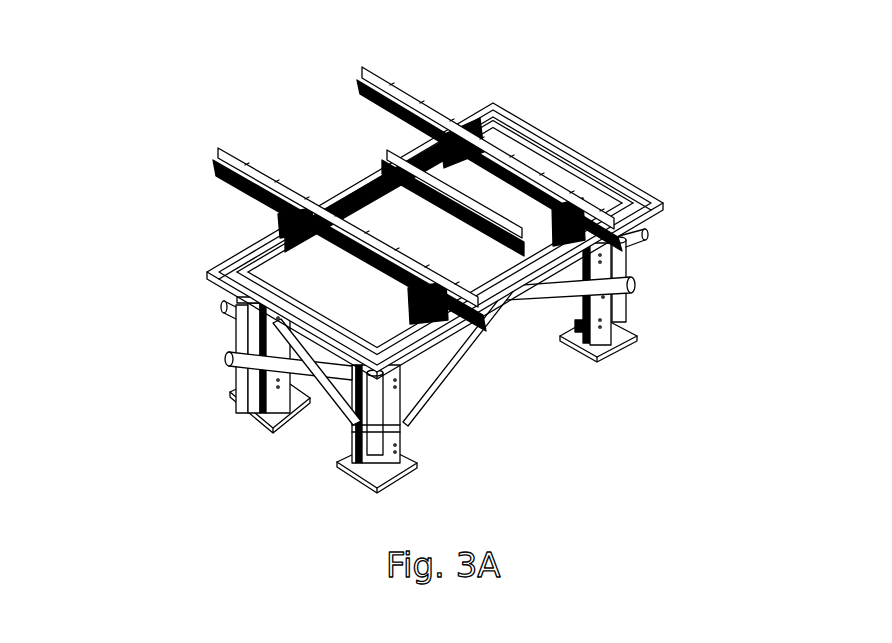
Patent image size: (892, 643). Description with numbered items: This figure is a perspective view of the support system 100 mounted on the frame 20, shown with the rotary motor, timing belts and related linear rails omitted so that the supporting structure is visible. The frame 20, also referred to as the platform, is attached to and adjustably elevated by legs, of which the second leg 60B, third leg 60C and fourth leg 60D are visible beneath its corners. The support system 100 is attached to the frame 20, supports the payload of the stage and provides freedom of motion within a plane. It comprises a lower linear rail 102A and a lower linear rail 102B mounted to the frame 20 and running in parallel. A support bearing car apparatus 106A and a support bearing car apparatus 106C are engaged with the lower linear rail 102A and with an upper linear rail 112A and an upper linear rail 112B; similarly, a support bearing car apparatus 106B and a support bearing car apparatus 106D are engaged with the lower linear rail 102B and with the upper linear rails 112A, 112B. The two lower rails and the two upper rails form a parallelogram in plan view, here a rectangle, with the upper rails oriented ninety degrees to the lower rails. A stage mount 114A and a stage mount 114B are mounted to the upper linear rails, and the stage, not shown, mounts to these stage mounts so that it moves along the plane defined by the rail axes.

The frame 20 is at (636, 188).
The support system 100 is at (346, 180).
The lower linear rail 102A is at (243, 272).
The lower linear rail 102B is at (520, 260).
The support bearing car apparatus 106A is at (430, 148).
The support bearing car apparatus 106B is at (557, 216).
The support bearing car apparatus 106C is at (284, 220).
The support bearing car apparatus 106D is at (410, 300).
The upper linear rail 112A is at (358, 86).
The upper linear rail 112B is at (244, 190).
The stage mount 114A is at (410, 90).
The stage mount 114B is at (220, 152).
The second leg 60B is at (633, 335).
The third leg 60C is at (258, 413).
The fourth leg 60D is at (370, 472).